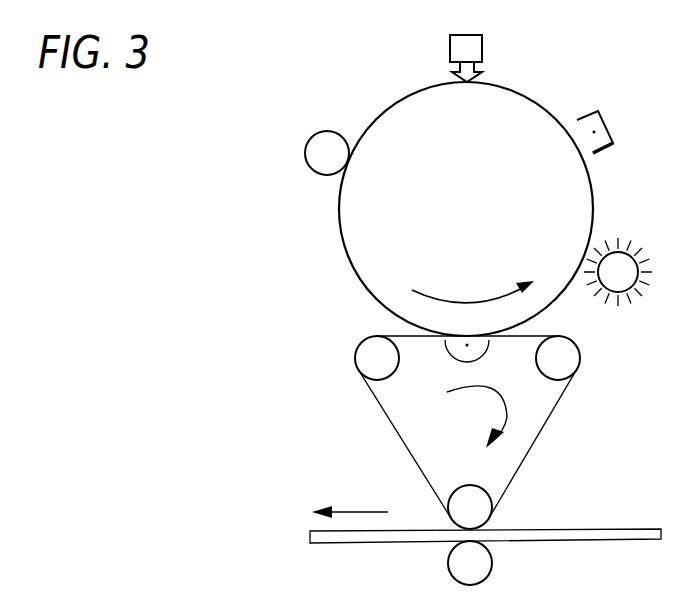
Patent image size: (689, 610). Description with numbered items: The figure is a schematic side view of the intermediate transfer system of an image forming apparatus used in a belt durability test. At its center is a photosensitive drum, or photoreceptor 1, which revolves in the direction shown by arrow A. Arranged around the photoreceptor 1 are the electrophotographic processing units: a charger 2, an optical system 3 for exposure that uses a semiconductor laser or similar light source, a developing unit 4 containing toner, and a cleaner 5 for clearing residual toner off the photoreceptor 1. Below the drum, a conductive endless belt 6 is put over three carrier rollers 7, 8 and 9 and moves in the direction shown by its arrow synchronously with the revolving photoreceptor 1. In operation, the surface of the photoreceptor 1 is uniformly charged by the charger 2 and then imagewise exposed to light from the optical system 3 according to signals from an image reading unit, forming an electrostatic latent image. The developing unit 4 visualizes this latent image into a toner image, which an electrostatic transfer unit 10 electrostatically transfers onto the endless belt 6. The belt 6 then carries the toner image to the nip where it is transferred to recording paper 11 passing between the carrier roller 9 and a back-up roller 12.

The photosensitive drum 1 is at (536, 98).
The charger 2 is at (606, 120).
The optical system 3 is at (450, 48).
The developing unit 4 is at (318, 133).
The cleaner 5 is at (645, 262).
The conductive endless belt 6 is at (545, 427).
The carrier roller 7 is at (582, 353).
The carrier roller 8 is at (355, 357).
The carrier roller 9 is at (492, 522).
The electrostatic transfer unit 10 is at (452, 363).
The recording paper 11 is at (610, 527).
The back-up roller 12 is at (493, 559).